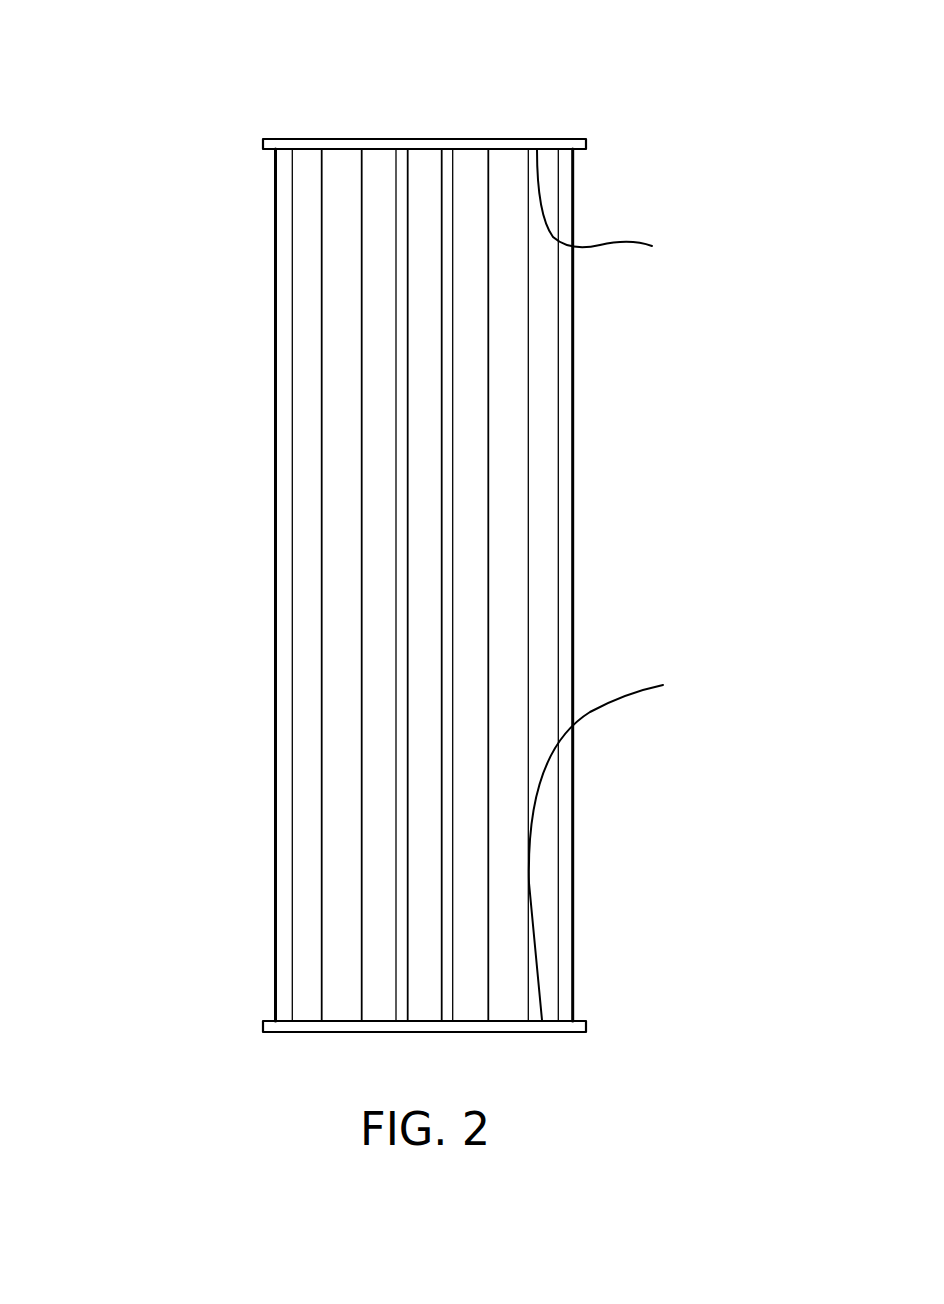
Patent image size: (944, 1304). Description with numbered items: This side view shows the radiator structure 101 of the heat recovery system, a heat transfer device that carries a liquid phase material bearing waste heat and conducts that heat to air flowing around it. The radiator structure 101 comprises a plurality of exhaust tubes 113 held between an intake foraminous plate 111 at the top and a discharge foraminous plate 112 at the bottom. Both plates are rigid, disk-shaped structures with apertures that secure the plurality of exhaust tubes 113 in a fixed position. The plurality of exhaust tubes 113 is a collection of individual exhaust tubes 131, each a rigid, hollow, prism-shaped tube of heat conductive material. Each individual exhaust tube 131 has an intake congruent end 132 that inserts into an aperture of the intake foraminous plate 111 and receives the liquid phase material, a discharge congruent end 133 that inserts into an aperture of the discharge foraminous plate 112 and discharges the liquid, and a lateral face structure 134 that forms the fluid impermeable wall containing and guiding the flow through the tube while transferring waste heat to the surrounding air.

The radiator structure 101 is at (158, 108).
The intake foraminous plate 111 is at (310, 137).
The discharge foraminous plate 112 is at (293, 1032).
The plurality of exhaust tubes 113 is at (422, 543).
The individual exhaust tube 131 is at (489, 585).
The intake congruent end 132 is at (627, 208).
The discharge congruent end 133 is at (630, 838).
The lateral face structure 134 is at (542, 572).